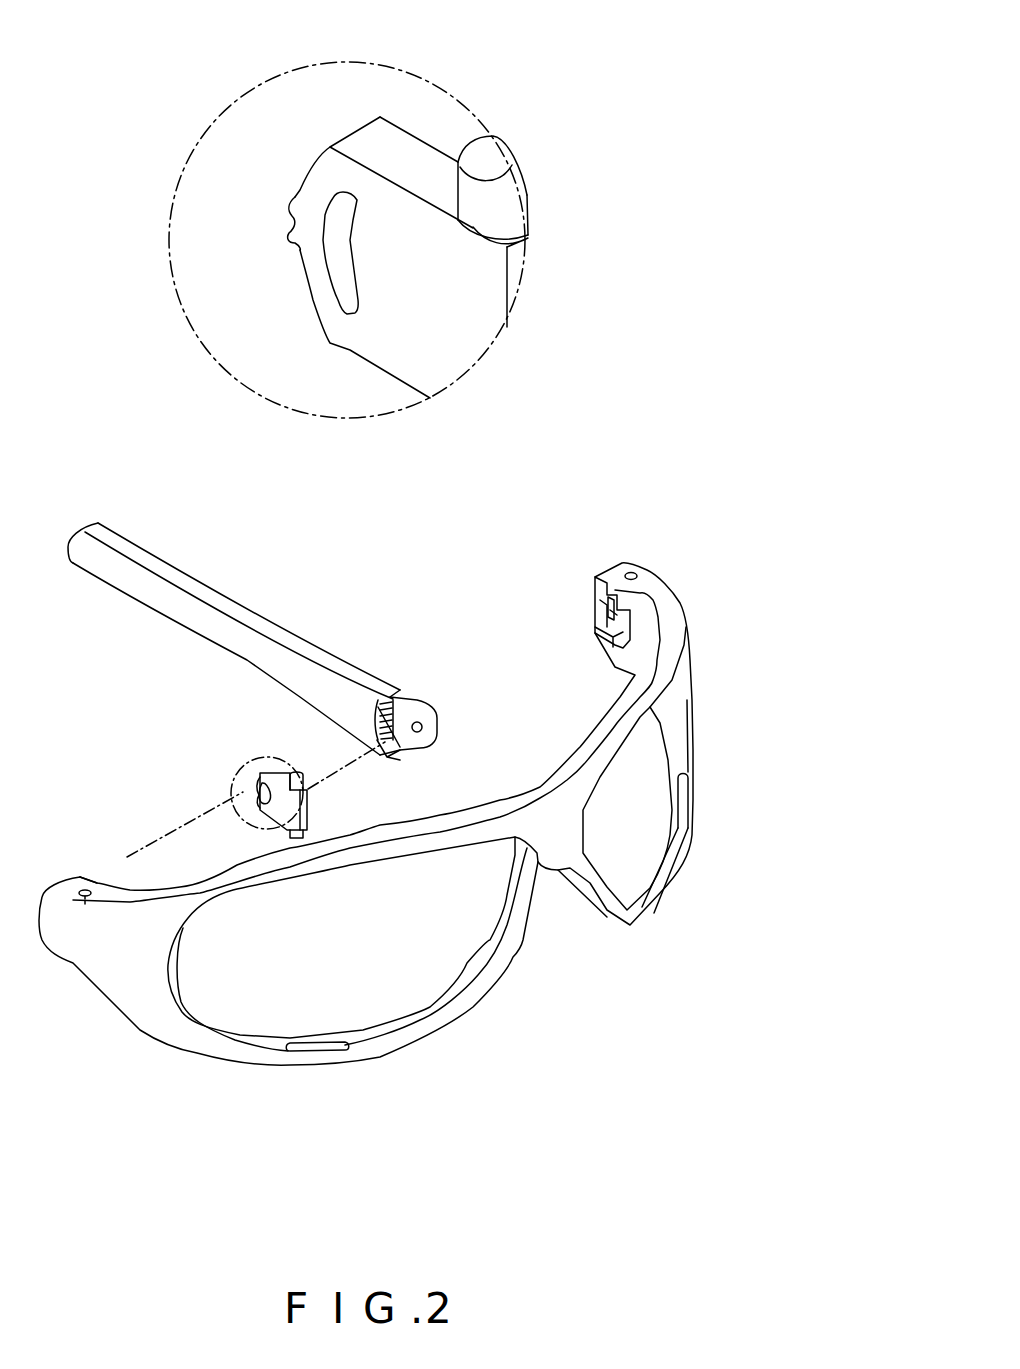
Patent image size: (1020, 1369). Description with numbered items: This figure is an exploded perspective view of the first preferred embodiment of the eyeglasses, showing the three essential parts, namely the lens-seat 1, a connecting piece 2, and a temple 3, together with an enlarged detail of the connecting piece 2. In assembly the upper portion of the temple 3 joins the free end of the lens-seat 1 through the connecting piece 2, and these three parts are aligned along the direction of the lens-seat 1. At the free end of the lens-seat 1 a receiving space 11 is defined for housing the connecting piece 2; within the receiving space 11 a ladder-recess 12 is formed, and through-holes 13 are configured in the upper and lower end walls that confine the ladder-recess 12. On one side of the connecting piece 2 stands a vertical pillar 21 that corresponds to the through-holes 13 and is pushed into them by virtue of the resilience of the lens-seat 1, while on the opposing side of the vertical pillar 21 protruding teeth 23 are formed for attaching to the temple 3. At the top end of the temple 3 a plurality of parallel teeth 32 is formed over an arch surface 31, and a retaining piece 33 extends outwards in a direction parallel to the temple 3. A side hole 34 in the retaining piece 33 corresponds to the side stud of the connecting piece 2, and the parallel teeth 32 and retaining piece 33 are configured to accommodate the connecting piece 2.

The lens-seat 1 is at (388, 759).
The receiving space 11 is at (600, 607).
The ladder-recess 12 is at (613, 607).
The through-holes 13 is at (632, 567).
The connecting piece 2 is at (313, 118).
The vertical pillar 21 is at (493, 203).
The protruding teeth 23 is at (293, 200).
The temple 3 is at (310, 671).
The arch surface 31 is at (400, 750).
The parallel teeth 32 is at (398, 720).
The retaining piece 33 is at (415, 700).
The side hole 34 is at (428, 728).